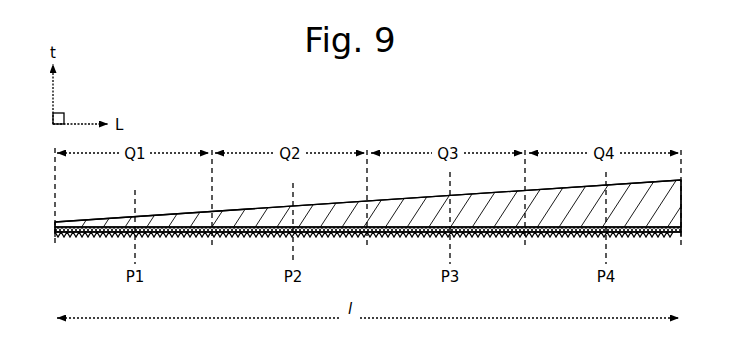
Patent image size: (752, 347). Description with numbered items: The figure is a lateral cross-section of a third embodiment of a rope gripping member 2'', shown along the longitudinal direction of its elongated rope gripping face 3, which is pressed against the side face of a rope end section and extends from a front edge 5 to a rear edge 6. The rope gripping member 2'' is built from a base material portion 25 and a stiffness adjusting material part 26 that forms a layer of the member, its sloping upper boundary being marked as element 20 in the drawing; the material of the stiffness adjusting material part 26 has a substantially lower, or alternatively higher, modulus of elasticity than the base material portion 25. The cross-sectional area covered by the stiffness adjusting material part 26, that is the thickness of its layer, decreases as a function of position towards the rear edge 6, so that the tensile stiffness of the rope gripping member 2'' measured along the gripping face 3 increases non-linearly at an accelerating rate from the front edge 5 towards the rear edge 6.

The rope gripping member 2'' is at (370, 166).
The rope gripping face 3 is at (267, 238).
The front edge 5 is at (53, 237).
The rear edge 6 is at (683, 235).
The upper surface of wedge-shaped layer 20 is at (125, 228).
The base material portion 25 is at (470, 208).
The stiffness adjusting material part 26 is at (342, 237).